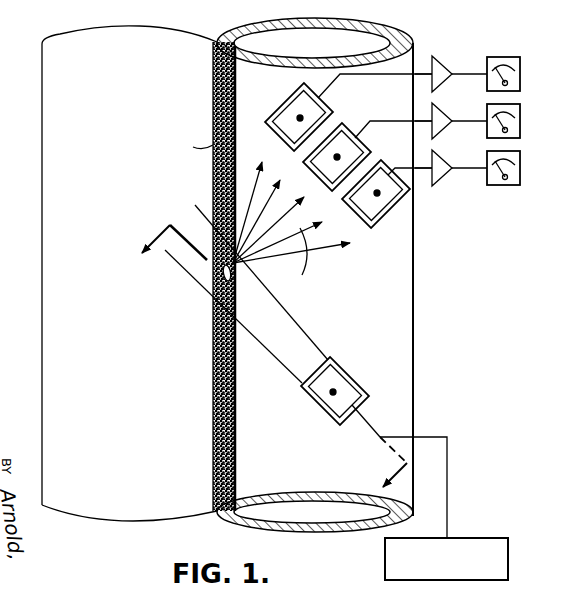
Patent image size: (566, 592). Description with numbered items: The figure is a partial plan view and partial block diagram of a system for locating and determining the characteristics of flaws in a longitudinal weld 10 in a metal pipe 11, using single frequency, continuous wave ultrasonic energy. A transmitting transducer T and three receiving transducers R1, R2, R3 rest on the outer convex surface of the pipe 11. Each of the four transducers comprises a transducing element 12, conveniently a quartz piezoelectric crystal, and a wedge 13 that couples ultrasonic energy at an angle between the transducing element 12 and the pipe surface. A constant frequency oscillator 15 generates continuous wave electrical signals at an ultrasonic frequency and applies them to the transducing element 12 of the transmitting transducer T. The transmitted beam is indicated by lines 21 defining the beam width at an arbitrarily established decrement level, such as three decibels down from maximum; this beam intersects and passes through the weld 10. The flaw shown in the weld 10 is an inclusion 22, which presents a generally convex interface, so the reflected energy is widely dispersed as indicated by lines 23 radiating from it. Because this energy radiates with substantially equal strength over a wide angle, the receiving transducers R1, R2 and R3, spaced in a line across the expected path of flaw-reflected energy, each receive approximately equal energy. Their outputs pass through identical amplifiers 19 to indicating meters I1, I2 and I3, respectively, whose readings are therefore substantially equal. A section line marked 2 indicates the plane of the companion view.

The longitudinal weld 10 is at (213, 340).
The metal pipe 11 is at (42, 158).
The transducing element 12 is at (290, 104).
The wedge 13 is at (301, 117).
The constant frequency oscillator 15 is at (508, 558).
The amplifier 19 is at (446, 67).
The lines defining beam width 21 is at (276, 299).
The inclusion 22 is at (220, 283).
The lines radiating from inclusion 23 is at (293, 258).
The section line 2- 2 is at (270, 351).
The receiving transducer R1 is at (350, 215).
The receiving transducer R2 is at (308, 174).
The receiving transducer R3 is at (278, 106).
The transmitting transducer T is at (320, 407).
The indicating meter I1 is at (520, 170).
The indicating meter I2 is at (520, 123).
The indicating meter I3 is at (520, 76).